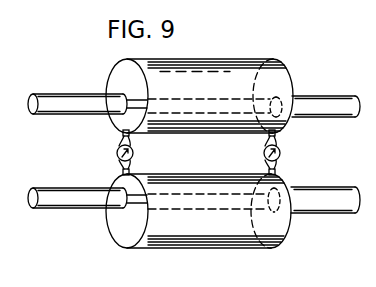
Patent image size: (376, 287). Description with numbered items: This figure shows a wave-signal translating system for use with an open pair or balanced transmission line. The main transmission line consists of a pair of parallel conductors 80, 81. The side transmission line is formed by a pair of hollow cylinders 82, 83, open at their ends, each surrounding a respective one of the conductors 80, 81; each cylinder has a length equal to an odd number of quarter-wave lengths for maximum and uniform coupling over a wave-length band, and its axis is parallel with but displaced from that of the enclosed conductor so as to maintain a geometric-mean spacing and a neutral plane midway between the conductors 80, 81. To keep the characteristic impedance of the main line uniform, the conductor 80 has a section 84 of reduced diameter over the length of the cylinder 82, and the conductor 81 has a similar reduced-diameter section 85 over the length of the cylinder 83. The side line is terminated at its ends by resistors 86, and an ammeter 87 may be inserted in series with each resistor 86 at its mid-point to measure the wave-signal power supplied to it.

The conductor 80 is at (60, 115).
The conductor 81 is at (55, 188).
The hollow cylinder 82 is at (238, 59).
The hollow cylinder 83 is at (236, 250).
The section of reduced diameter 84 is at (211, 93).
The section of reduced diameter 85 is at (203, 209).
The resistor 86 is at (119, 147).
The ammeter 87 is at (133, 153).